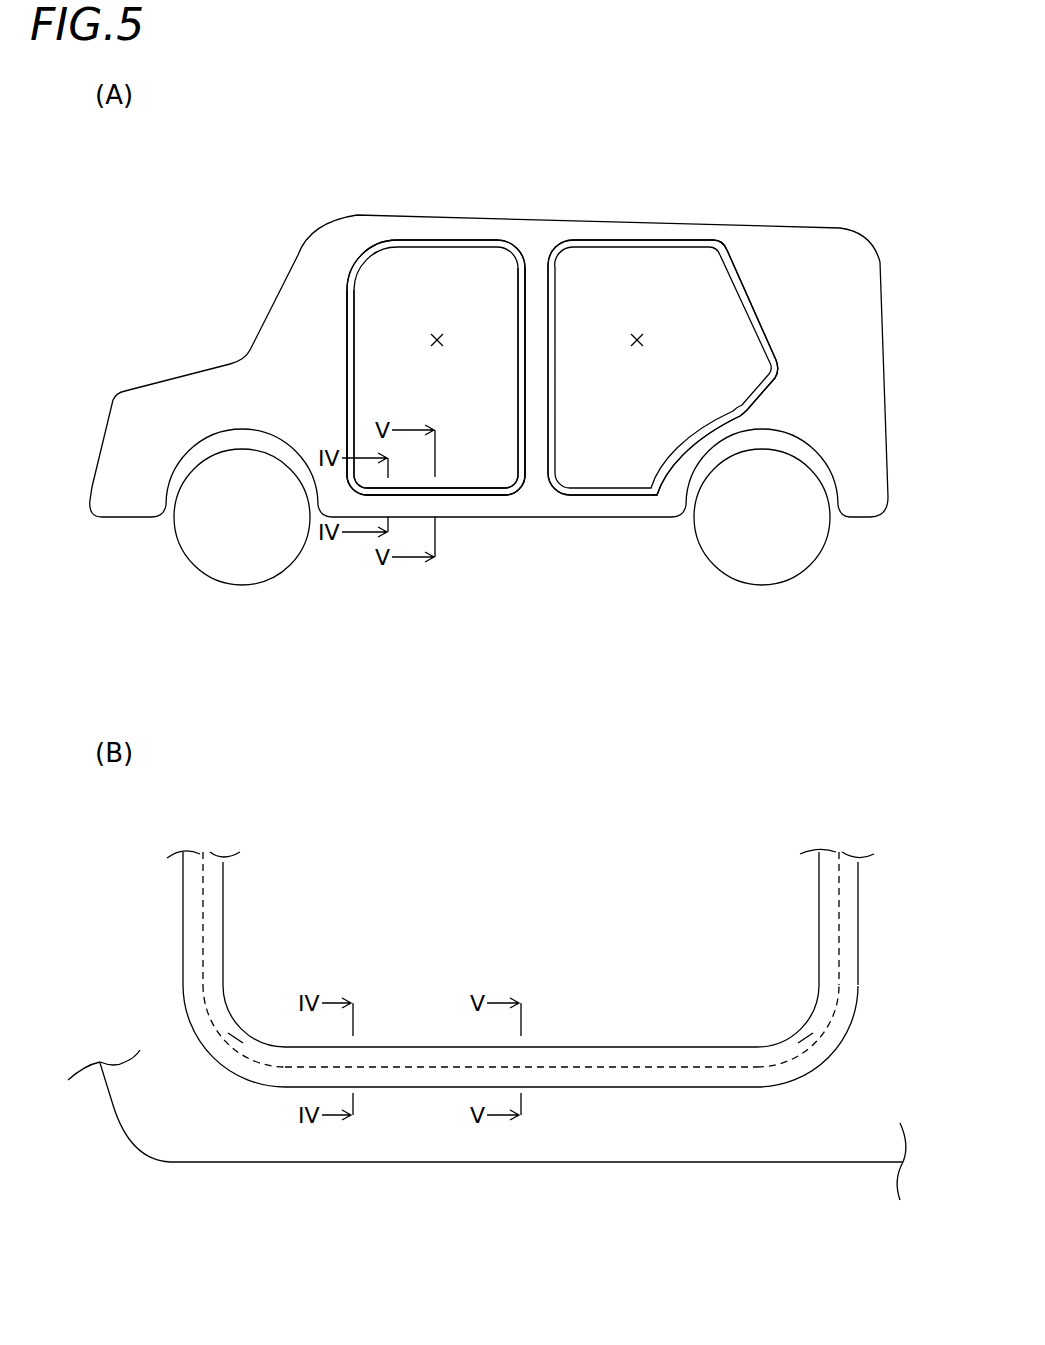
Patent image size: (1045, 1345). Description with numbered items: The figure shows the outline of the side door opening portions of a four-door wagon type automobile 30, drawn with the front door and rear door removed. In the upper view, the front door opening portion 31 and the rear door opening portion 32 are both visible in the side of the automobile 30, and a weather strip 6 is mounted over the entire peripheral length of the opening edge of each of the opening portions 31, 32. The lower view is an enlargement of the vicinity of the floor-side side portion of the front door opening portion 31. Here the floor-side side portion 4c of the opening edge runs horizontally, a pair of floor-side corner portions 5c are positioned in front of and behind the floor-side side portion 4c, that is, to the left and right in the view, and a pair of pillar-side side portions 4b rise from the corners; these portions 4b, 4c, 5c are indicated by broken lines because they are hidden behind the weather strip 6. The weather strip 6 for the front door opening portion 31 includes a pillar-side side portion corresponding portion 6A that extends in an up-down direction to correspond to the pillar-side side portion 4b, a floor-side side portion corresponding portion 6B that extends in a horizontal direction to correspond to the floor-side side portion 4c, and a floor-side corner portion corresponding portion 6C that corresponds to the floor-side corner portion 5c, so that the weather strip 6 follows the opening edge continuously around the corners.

The automobile 30 is at (287, 234).
The weather strip 6 is at (408, 247).
The front door opening portion 31 is at (438, 332).
The rear door opening portion 32 is at (637, 332).
The pillar-side side portion corresponding portion 6A is at (355, 365).
The floor-side side portion corresponding portion 6B is at (447, 492).
The floor-side corner portion corresponding portion 6C is at (510, 485).
The pillar-side side portion 4b is at (203, 894).
The floor-side corner portion 5c is at (245, 1032).
The floor-side side portion 4c is at (568, 1065).